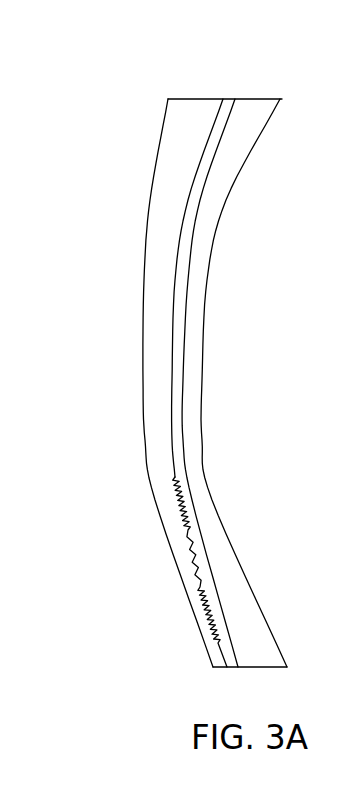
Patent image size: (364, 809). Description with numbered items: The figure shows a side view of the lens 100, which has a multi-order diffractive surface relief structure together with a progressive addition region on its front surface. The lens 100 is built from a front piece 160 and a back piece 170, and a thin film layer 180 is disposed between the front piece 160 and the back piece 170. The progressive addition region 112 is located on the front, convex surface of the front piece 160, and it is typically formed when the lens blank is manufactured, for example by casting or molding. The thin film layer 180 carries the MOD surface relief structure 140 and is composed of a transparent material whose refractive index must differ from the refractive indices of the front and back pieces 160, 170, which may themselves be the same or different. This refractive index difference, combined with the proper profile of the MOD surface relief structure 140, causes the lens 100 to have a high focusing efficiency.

The lens 100 is at (95, 82).
The progressive addition region 112 is at (178, 597).
The MOD surface relief structure 140 is at (178, 503).
The front piece 160 is at (193, 115).
The back piece 170 is at (250, 115).
The thin film layer 180 is at (178, 408).